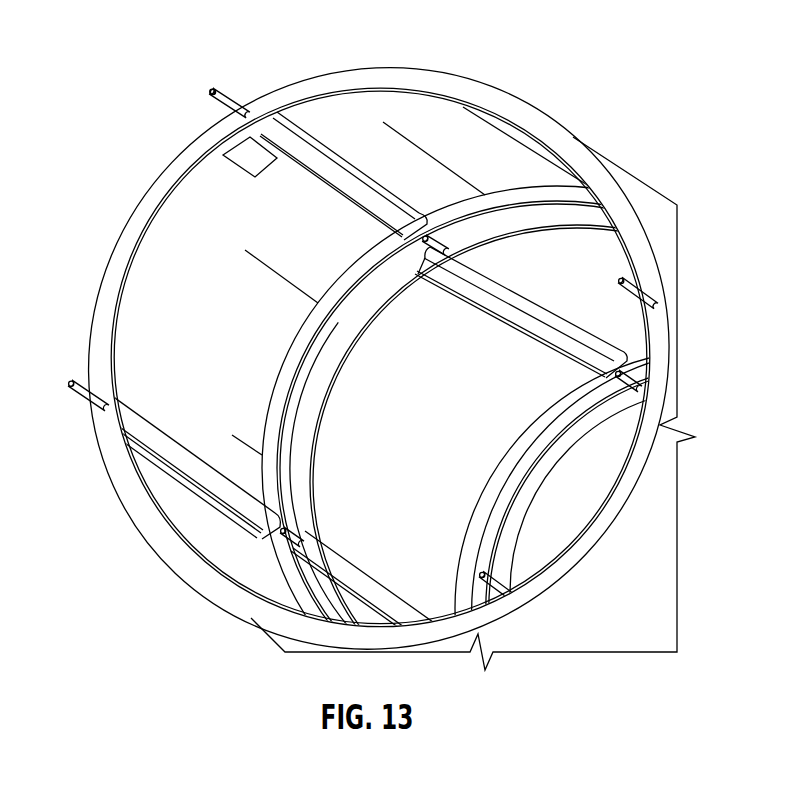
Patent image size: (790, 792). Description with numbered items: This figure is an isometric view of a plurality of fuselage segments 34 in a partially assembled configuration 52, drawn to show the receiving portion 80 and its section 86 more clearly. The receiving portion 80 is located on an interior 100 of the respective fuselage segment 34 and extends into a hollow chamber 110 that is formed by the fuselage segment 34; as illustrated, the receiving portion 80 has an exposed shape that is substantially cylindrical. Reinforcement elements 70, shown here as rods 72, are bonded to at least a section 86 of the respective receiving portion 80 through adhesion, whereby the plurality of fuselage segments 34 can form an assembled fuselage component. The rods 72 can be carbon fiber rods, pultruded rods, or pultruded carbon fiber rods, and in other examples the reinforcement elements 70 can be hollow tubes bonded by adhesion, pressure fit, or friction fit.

The fuselage segment 34 is at (548, 132).
The partially assembled configuration 52 is at (657, 109).
The reinforcement element 70 is at (228, 100).
The rod 72 is at (217, 107).
The receiving portion 80 is at (288, 145).
The section 86 is at (238, 170).
The interior 100 is at (420, 130).
The hollow chamber 110 is at (197, 328).